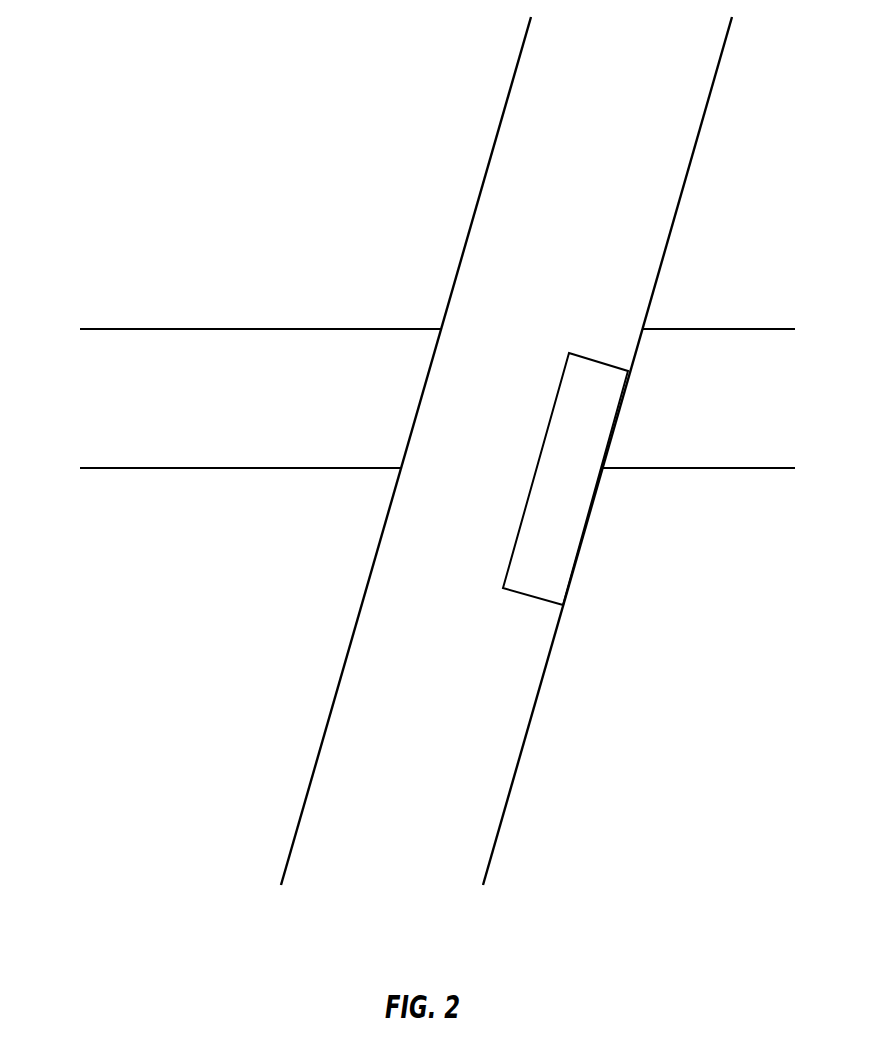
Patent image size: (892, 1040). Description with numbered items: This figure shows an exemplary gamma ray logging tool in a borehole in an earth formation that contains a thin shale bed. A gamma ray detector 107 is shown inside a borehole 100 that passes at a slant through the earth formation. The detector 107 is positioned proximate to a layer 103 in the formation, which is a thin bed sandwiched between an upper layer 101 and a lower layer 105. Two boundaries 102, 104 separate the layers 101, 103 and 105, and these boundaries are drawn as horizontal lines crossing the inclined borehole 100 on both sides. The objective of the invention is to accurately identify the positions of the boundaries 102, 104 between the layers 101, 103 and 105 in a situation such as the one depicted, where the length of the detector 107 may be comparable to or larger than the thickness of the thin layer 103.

The borehole 100 is at (594, 250).
The layer 101 is at (756, 256).
The boundary 102 is at (98, 328).
The layer 103 is at (756, 406).
The boundary 104 is at (98, 467).
The layer 105 is at (756, 574).
The gamma ray detector 107 is at (553, 410).